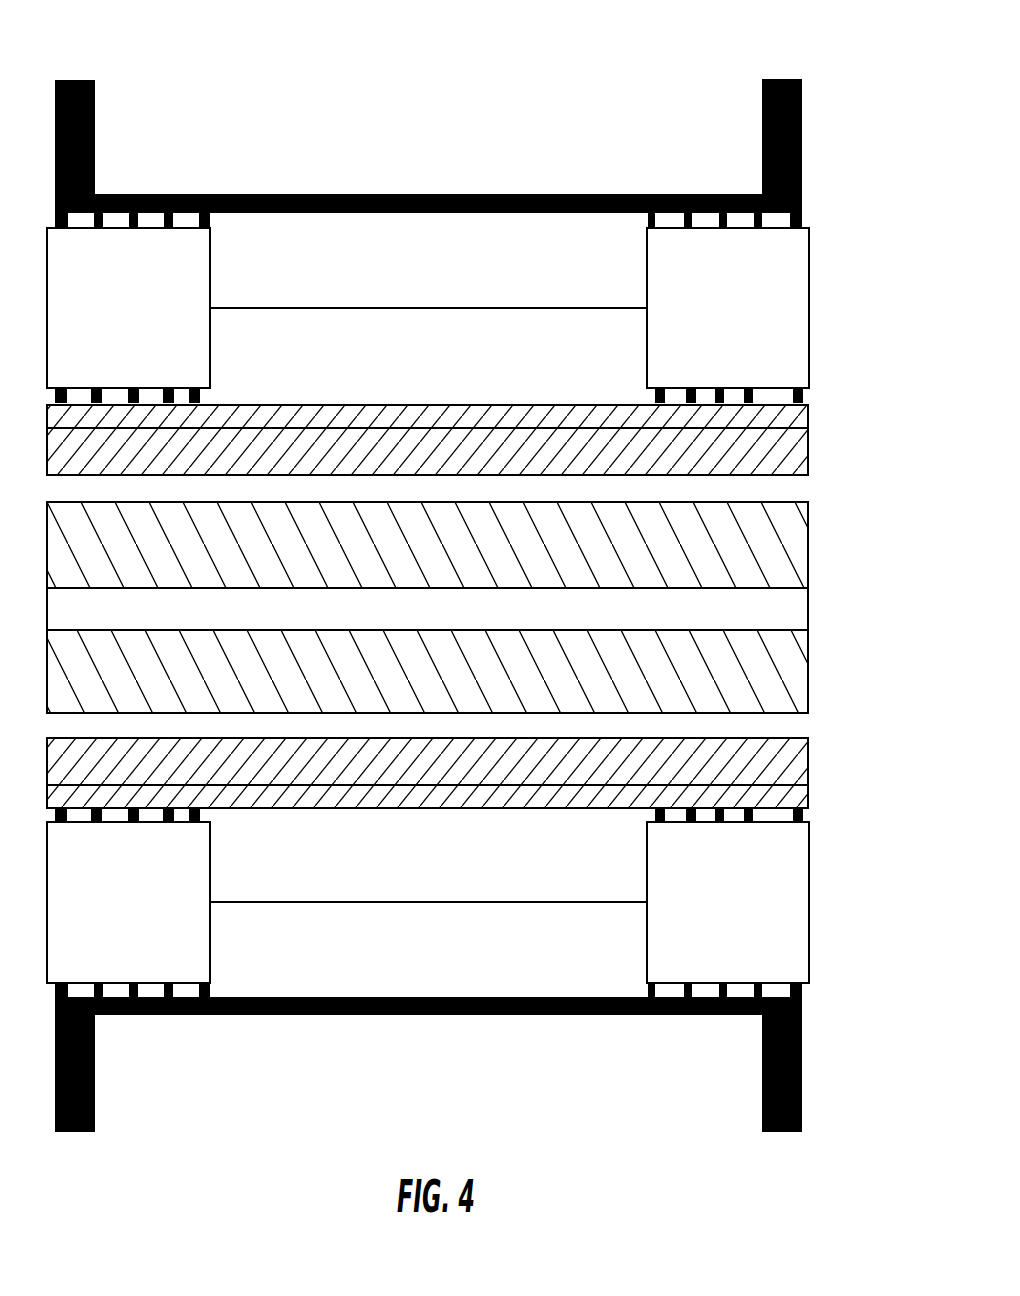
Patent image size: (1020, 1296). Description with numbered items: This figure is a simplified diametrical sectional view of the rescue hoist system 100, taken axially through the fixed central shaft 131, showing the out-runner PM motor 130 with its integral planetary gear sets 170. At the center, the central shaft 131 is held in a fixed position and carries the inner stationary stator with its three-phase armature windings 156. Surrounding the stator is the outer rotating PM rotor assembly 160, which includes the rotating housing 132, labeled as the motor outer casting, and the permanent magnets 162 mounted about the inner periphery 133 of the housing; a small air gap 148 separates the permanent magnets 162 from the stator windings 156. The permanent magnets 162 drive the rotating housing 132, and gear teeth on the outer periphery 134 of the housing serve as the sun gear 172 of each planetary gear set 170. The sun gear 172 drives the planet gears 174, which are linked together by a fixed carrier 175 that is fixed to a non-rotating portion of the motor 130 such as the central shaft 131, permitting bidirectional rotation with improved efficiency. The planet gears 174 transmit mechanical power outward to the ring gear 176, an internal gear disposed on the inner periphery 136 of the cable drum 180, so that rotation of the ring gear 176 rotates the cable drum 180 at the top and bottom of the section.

The hoist system 100 is at (680, 52).
The out-runner PM motor 130 is at (497, 80).
The fixed central shaft 131 is at (808, 610).
The rotating housing 132 is at (572, 403).
The inner periphery of the rotating housing 133 is at (260, 418).
The outer periphery of the rotating housing 134 is at (475, 405).
The inner periphery of the cable drum 136 is at (523, 213).
The air gap 148 is at (790, 488).
The stator windings 156 is at (630, 560).
The PM rotor assembly 160 is at (815, 425).
The permanent magnets 162 is at (808, 453).
The planetary gear sets 170 is at (222, 292).
The sun gear 172 is at (208, 393).
The planet gears 174 is at (147, 351).
The fixed carrier 175 is at (500, 299).
The ring gear 176 is at (208, 223).
The cable drum 180 is at (503, 148).